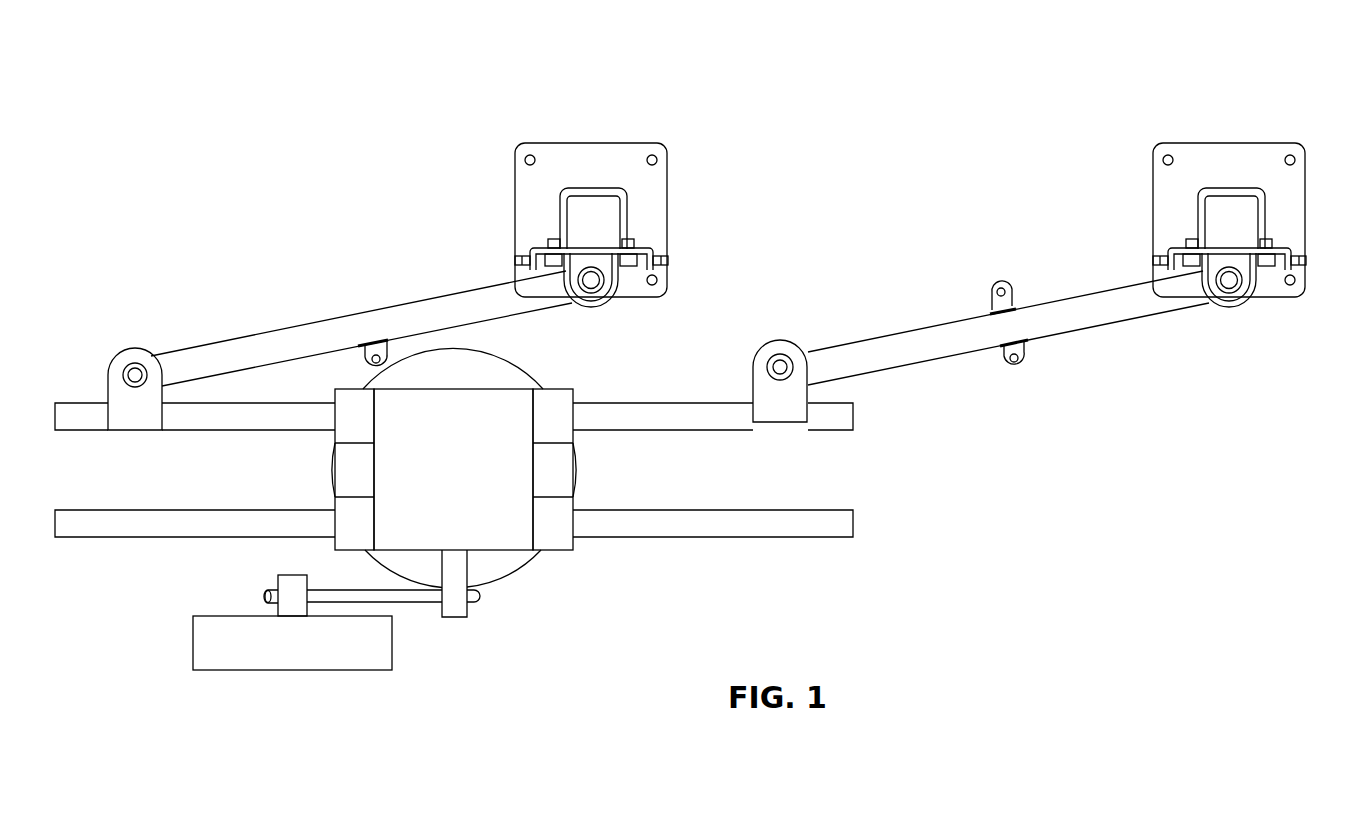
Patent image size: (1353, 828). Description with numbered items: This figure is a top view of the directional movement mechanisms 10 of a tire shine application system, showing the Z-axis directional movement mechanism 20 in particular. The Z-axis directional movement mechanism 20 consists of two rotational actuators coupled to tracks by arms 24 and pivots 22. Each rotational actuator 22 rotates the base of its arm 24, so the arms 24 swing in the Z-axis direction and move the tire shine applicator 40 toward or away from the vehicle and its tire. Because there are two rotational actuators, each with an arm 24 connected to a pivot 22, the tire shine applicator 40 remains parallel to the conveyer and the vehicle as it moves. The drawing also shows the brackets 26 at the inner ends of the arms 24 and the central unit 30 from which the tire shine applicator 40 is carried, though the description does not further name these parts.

The directional movement mechanism 10 is at (982, 102).
The Z-axis directional movement mechanism 20 is at (636, 119).
The pivot 22 is at (611, 216).
The arm 24 is at (381, 306).
The pivot bracket 26 is at (134, 362).
The central unit 30 is at (550, 576).
The tire shine applicator 40 is at (314, 684).